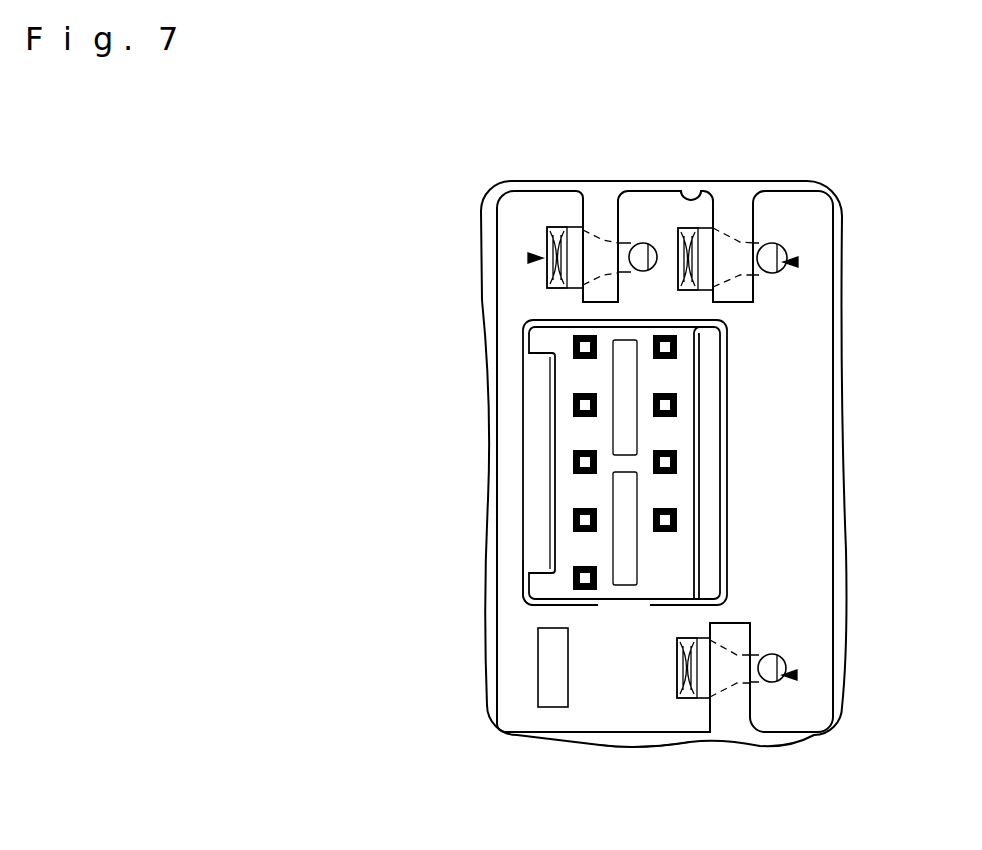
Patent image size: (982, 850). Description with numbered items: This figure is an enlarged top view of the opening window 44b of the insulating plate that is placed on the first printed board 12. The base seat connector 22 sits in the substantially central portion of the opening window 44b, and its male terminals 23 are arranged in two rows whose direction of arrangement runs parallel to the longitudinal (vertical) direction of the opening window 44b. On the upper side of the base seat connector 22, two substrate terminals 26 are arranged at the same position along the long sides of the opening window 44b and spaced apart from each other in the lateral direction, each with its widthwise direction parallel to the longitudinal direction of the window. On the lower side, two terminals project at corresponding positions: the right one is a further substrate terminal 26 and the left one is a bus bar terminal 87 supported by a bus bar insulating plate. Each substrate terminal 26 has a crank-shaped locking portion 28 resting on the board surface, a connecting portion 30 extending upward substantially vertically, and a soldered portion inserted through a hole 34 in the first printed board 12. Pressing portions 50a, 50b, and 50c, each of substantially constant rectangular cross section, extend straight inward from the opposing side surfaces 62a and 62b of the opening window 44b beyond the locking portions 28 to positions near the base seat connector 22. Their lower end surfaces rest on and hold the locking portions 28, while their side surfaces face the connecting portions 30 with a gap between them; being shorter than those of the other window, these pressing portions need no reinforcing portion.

The first printed board 12 is at (512, 483).
The base seat connector 22 is at (512, 617).
The male terminals 23 is at (585, 352).
The substrate terminals 26 is at (529, 258).
The locking portion 28 is at (601, 252).
The connecting portion 30 is at (553, 268).
The holes 34 is at (632, 246).
The opening window 44b is at (490, 735).
The pressing portion 50a is at (736, 292).
The pressing portion 50b is at (590, 262).
The pressing portion 50c is at (737, 632).
The side surface 62a is at (683, 196).
The side surface 62b is at (640, 740).
The bus bar terminal 87 is at (556, 668).